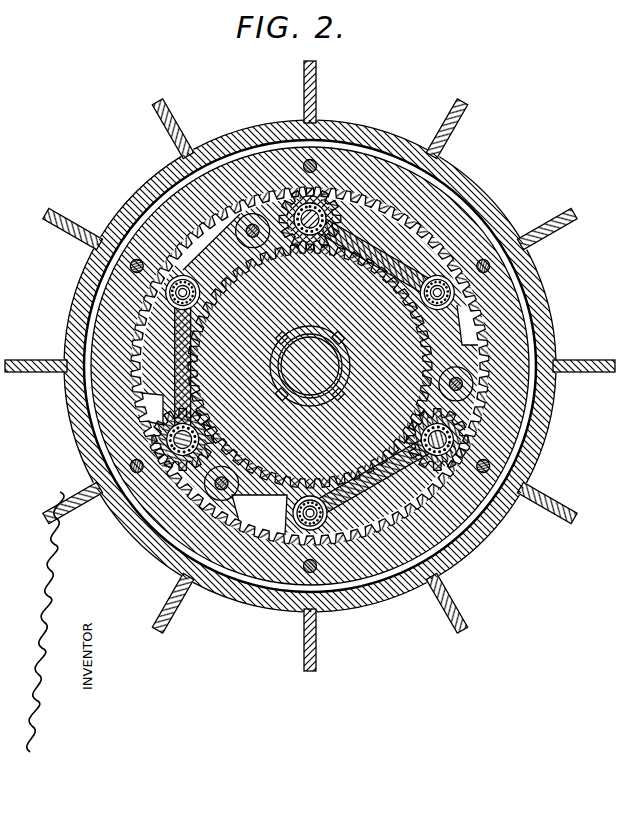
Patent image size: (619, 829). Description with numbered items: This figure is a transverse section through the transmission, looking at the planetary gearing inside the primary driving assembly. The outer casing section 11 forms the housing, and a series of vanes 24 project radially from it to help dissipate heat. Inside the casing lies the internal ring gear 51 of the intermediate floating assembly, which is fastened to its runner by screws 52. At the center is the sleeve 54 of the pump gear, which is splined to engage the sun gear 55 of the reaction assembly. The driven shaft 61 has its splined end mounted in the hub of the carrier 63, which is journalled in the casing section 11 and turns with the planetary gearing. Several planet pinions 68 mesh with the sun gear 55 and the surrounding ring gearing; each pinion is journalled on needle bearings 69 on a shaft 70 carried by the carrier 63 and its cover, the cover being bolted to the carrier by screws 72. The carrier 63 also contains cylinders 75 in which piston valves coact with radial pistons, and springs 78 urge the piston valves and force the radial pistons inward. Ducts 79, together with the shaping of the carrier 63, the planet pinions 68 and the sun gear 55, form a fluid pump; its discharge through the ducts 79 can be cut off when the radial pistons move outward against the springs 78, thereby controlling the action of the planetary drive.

The casing section 11 is at (294, 366).
The vanes 24 is at (310, 377).
The internal ring gear 51 is at (310, 366).
The screws 52 is at (307, 331).
The sleeve 54 is at (345, 366).
The sun gear 55 is at (295, 353).
The driven shaft 61 is at (328, 357).
The carrier 63 is at (333, 370).
The planet pinions 68 is at (309, 327).
The needle bearings 69 is at (339, 357).
The shafts 70 is at (310, 366).
The screws 72 is at (351, 329).
The cylinders 75 is at (376, 394).
The springs 78 is at (247, 458).
The ducts 79 is at (274, 343).